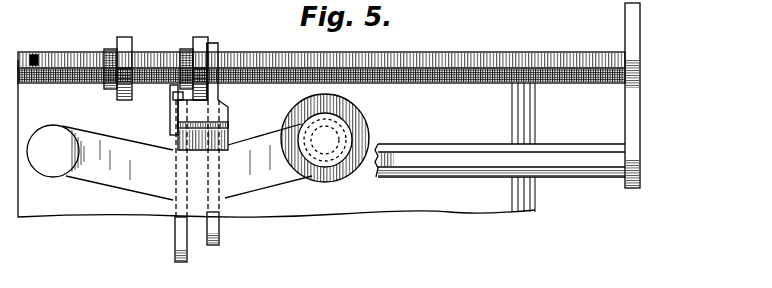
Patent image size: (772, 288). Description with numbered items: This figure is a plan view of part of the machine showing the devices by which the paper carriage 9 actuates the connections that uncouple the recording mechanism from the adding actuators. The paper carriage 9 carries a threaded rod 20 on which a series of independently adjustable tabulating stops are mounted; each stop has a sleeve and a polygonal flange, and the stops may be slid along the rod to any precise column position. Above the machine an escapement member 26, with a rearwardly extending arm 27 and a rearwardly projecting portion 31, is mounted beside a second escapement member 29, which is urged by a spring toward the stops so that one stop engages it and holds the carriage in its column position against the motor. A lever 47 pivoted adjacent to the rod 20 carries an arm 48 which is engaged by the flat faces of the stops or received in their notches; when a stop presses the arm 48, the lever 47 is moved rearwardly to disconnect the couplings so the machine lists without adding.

The paper carriage 9 is at (640, 113).
The threaded rod 20 is at (455, 84).
The escapement member 26 is at (174, 98).
The rearwardly extending arm 27 is at (175, 252).
The escapement member 29 is at (218, 96).
The rearwardly projecting portion 31 is at (220, 238).
The lever 47 is at (135, 174).
The arm 48 is at (218, 123).